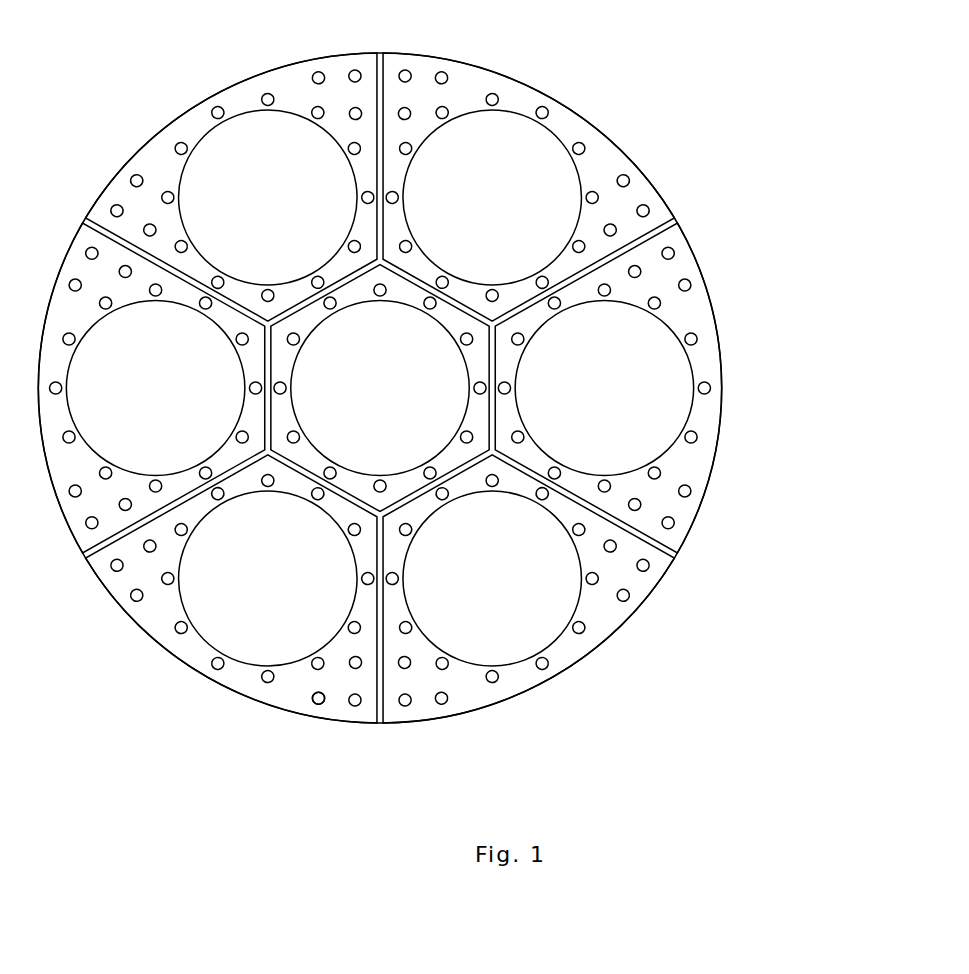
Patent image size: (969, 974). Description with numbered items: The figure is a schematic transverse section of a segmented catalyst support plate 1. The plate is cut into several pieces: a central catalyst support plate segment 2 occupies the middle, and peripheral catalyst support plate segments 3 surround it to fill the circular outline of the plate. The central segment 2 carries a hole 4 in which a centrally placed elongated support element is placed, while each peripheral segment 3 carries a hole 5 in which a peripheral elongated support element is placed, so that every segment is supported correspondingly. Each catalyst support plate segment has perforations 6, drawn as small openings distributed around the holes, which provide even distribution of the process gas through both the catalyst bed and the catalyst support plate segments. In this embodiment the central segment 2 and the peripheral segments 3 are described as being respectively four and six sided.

The reactor body 1 is at (638, 113).
The partition wall 2 is at (478, 335).
The peripheral segment 3 is at (527, 680).
The central channel 4 is at (373, 443).
The peripheral channel 5 is at (550, 600).
The hole 6 is at (316, 704).